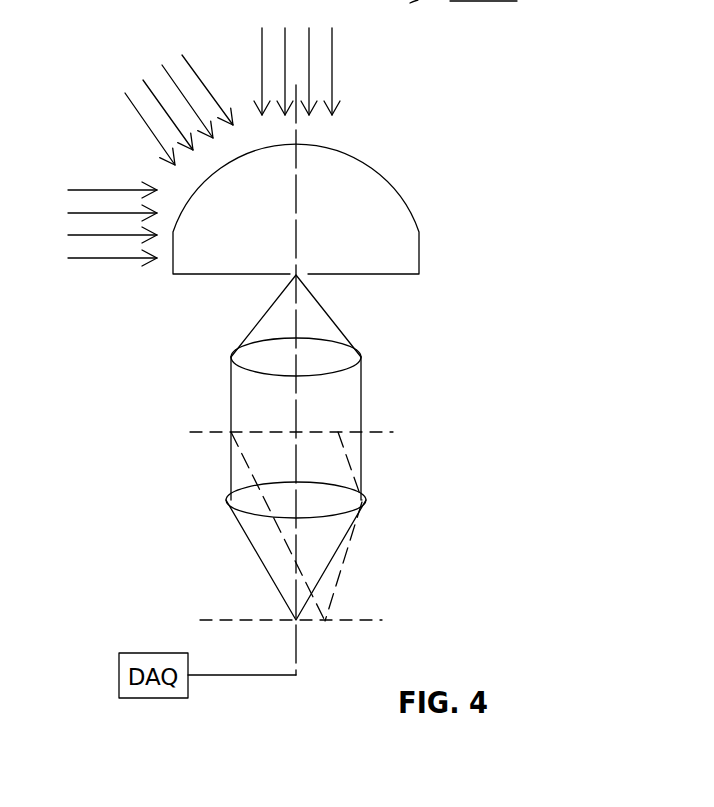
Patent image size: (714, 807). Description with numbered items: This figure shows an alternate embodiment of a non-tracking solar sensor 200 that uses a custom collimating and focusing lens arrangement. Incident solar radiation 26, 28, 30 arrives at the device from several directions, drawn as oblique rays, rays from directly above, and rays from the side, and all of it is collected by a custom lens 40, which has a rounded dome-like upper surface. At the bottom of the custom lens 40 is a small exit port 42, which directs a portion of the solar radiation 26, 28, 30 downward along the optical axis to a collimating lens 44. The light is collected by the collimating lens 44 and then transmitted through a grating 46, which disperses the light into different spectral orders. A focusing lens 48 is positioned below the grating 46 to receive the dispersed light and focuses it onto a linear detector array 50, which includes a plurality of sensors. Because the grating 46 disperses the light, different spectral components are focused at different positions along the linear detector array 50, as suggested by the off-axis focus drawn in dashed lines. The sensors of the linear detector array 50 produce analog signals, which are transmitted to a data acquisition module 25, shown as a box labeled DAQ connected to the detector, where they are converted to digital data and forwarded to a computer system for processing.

The data acquisition module 25 is at (493, 2).
The incident solar radiation 26 is at (179, 107).
The incident solar radiation 28 is at (297, 57).
The incident solar radiation 30 is at (95, 224).
The custom lens 40 is at (372, 165).
The exit port 42 is at (313, 282).
The collimating lens 44 is at (249, 363).
The grating 46 is at (375, 432).
The focusing lens 48 is at (366, 498).
The linear detector array 50 is at (327, 622).
The non-tracking solar sensor 200 is at (359, 400).